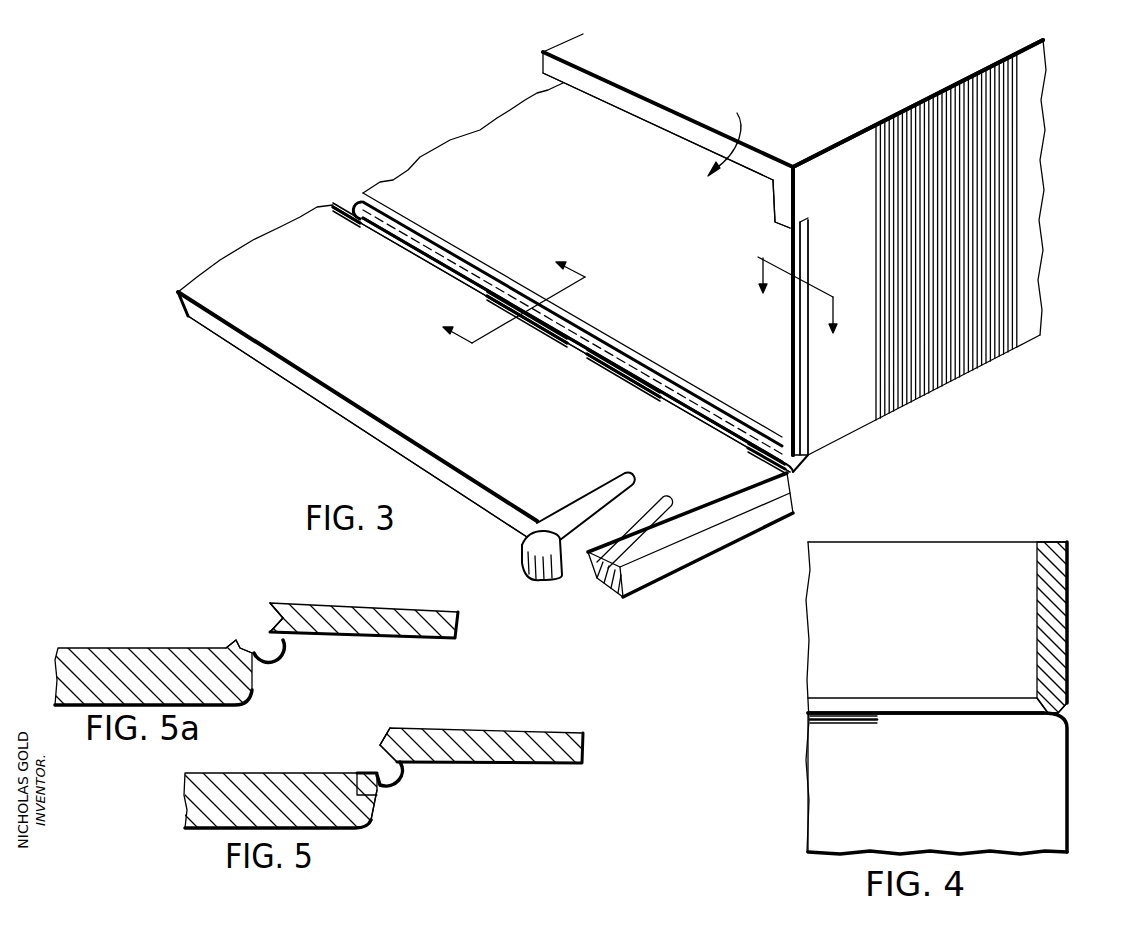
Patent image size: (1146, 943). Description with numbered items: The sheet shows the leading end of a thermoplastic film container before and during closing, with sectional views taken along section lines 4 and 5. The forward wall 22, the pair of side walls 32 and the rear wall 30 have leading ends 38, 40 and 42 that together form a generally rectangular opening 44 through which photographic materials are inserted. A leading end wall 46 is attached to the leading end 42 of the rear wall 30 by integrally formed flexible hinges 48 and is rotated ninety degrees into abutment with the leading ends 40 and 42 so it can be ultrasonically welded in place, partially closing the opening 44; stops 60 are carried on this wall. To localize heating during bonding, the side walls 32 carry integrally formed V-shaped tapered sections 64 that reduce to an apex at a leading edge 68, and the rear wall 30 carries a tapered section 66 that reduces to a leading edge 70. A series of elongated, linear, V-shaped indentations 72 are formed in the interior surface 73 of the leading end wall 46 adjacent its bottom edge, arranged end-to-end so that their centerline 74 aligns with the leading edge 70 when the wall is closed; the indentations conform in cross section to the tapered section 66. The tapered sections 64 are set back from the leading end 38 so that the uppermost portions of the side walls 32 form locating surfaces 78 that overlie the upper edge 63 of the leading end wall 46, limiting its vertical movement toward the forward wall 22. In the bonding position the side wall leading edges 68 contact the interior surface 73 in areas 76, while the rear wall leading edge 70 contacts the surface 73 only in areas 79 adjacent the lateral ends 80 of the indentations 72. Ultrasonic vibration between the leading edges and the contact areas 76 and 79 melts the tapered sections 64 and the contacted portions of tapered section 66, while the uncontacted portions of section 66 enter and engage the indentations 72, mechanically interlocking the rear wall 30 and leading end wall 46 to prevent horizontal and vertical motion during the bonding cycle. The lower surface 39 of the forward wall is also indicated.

In FIG. 3, the section line 4— 4 is at (796, 305).
In FIG. 3, the section line 5— 5 is at (506, 293).
In FIG. 3, the forward wall 22 is at (996, 62).
In FIG. 3, the rear wall 30 is at (897, 410).
In FIG. 5a, the rear wall 30 is at (398, 607).
In FIG. 5, the rear wall 30 is at (510, 723).
In FIG. 3, the side walls 32 is at (1035, 276).
In FIG. 4, the side walls 32 is at (1068, 567).
In FIG. 3, the leading end of forward wall 38 is at (690, 104).
In FIG. 3, the top board lower surface 39 is at (636, 114).
In FIG. 3, the leading ends of side walls 40 is at (817, 397).
In FIG. 3, the leading end of rear wall 42 is at (427, 214).
In FIG. 3, the opening 44 is at (724, 139).
In FIG. 3, the leading end wall 46 is at (313, 410).
In FIG. 4, the leading end wall 46 is at (815, 775).
In FIG. 3, the flexible hinges 48 is at (357, 204).
In FIG. 5a, the flexible hinges 48 is at (283, 660).
In FIG. 5, the flexible hinges 48 is at (402, 781).
In FIG. 3, the stops 60 is at (552, 540).
In FIG. 3, the upper edge of leading end wall 63 is at (437, 465).
In FIG. 3, the tapered sections of side walls 64 is at (803, 374).
In FIG. 4, the tapered sections of side walls 64 is at (1052, 706).
In FIG. 3, the tapered section of rear wall 66 is at (650, 370).
In FIG. 5a, the tapered section of rear wall 66 is at (315, 613).
In FIG. 5, the tapered section of rear wall 66 is at (390, 736).
In FIG. 3, the leading edge of side walls 68 is at (793, 368).
In FIG. 4, the leading edge of side walls 68 is at (1068, 725).
In FIG. 3, the leading edge of rear wall 70 is at (604, 341).
In FIG. 5a, the leading edge of rear wall 70 is at (237, 640).
In FIG. 5, the leading edge of rear wall 70 is at (381, 745).
In FIG. 3, the indentations 72 is at (345, 218).
In FIG. 4, the indentations 72 is at (843, 725).
In FIG. 5a, the indentations 72 is at (271, 614).
In FIG. 5, the indentations 72 is at (360, 773).
In FIG. 3, the interior surface of leading end wall 73 is at (470, 405).
In FIG. 4, the interior surface of leading end wall 73 is at (897, 819).
In FIG. 5a, the interior surface of leading end wall 73 is at (135, 648).
In FIG. 5, the interior surface of leading end wall 73 is at (277, 773).
In FIG. 5, the centerline of indentations 74 is at (372, 808).
In FIG. 3, the contact areas 76 is at (707, 528).
In FIG. 3, the locating surfaces 78 is at (776, 223).
In FIG. 3, the contact areas 79 is at (410, 257).
In FIG. 3, the lateral ends of indentations 80 is at (352, 220).